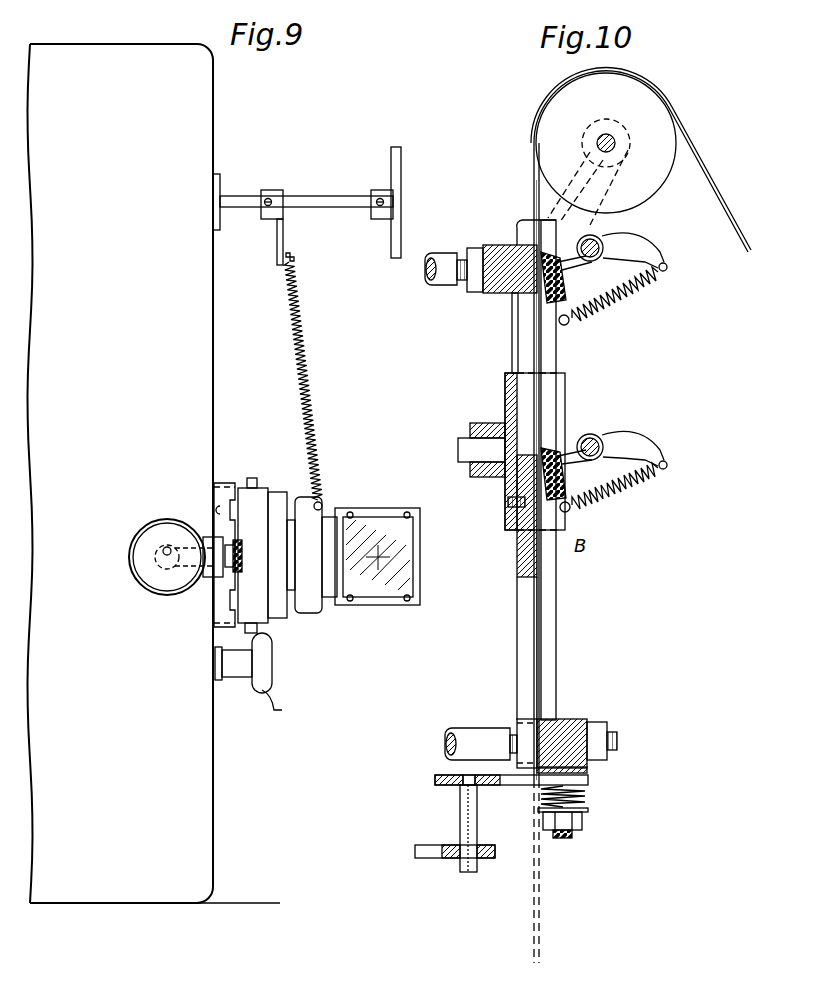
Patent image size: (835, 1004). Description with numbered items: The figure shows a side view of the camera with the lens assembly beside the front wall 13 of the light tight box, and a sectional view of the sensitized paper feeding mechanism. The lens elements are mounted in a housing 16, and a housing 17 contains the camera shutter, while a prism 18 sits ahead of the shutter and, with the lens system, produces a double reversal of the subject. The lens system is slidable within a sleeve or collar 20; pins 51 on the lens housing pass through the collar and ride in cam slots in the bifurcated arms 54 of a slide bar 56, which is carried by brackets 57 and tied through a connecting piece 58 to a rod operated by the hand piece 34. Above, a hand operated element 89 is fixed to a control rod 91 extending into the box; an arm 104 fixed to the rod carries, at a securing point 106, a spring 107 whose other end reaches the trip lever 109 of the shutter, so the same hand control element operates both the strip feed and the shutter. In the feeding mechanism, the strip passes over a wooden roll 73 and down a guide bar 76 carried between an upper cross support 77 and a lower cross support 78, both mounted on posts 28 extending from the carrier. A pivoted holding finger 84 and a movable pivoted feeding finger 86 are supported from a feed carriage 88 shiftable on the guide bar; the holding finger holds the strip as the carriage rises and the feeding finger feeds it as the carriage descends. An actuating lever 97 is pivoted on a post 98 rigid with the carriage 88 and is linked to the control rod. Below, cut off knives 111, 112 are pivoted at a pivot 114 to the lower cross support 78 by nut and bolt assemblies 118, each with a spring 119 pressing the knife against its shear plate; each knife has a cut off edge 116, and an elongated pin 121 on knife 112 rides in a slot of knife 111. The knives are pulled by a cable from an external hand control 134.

In FIG. 9, the front wall 13 is at (214, 332).
In FIG. 9, the control rod 91 is at (318, 197).
In FIG. 9, the hand operated element 89 is at (400, 186).
In FIG. 9, the arm 104 is at (275, 235).
In FIG. 9, the securing point 106 is at (296, 258).
In FIG. 9, the spring 107 is at (306, 326).
In FIG. 9, the trip lever 109 is at (323, 503).
In FIG. 9, the bifurcated arms 54 is at (235, 484).
In FIG. 9, the pins 51 is at (258, 482).
In FIG. 9, the brackets 57 is at (214, 503).
In FIG. 9, the housing 16 is at (275, 513).
In FIG. 9, the slide bar 56 is at (232, 544).
In FIG. 9, the connecting piece 58 is at (208, 578).
In FIG. 9, the hand piece 34 is at (140, 565).
In FIG. 9, the housing 17 is at (310, 610).
In FIG. 9, the prism 18 is at (410, 556).
In FIG. 9, the sleeve or collar 20 is at (273, 638).
In FIG. 9, the external hand control 134 is at (286, 704).
In FIG. 10, the roll 73 is at (655, 105).
In FIG. 10, the guide bar 76 is at (560, 356).
In FIG. 10, the upper cross support 77 is at (493, 247).
In FIG. 10, the rods or posts 28 is at (440, 262).
In FIG. 10, the holding finger 84 is at (566, 276).
In FIG. 10, the feed carriage 88 is at (566, 400).
In FIG. 10, the actuating lever 97 is at (484, 424).
In FIG. 10, the post 98 is at (457, 444).
In FIG. 10, the feeding finger 86 is at (567, 476).
In FIG. 10, the lower cross support 78 is at (574, 720).
In FIG. 10, the cut off knife 112 is at (436, 777).
In FIG. 10, the cut off edge 116 is at (492, 784).
In FIG. 10, the elongated pin 121 is at (462, 812).
In FIG. 10, the cut off knife 111 is at (440, 858).
In FIG. 10, the spring 119 is at (588, 796).
In FIG. 10, the nut and bolt assemblies 118 is at (588, 810).
In FIG. 10, the pivot 114 is at (566, 840).